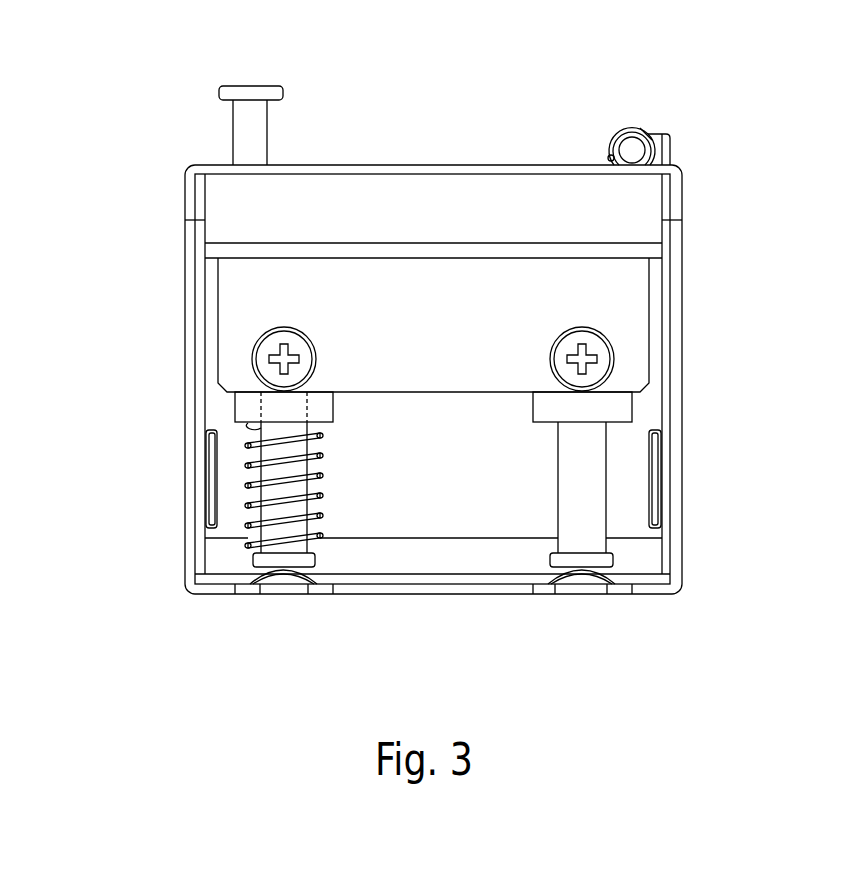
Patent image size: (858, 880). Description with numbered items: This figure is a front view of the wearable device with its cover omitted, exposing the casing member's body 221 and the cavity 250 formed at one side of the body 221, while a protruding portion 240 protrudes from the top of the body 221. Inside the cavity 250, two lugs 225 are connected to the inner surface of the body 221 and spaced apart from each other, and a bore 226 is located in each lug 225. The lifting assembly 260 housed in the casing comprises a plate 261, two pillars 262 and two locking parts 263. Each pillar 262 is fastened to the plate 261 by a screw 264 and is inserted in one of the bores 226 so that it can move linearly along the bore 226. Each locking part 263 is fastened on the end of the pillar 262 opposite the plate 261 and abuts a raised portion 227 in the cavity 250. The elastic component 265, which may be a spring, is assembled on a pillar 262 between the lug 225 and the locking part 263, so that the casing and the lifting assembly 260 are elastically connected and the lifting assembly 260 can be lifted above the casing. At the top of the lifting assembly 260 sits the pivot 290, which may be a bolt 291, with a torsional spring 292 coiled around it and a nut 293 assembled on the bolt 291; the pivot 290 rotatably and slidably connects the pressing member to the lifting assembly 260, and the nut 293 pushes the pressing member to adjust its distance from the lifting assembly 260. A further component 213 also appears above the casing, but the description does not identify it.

The knob 213 is at (252, 92).
The body 221 is at (193, 200).
The lug 225 is at (243, 412).
The bore 226 is at (244, 402).
The raised portion 227 is at (285, 578).
The protruding portion 240 is at (400, 170).
The cavity 250 is at (375, 560).
The lifting assembly 260 is at (520, 412).
The plate 261 is at (594, 307).
The pillar 262 is at (594, 489).
The locking part 263 is at (504, 549).
The screw 264 is at (600, 361).
The elastic component 265 is at (250, 487).
The pivot 290 is at (617, 110).
The bolt 291 is at (632, 132).
The torsional spring 292 is at (615, 143).
The nut 293 is at (643, 132).